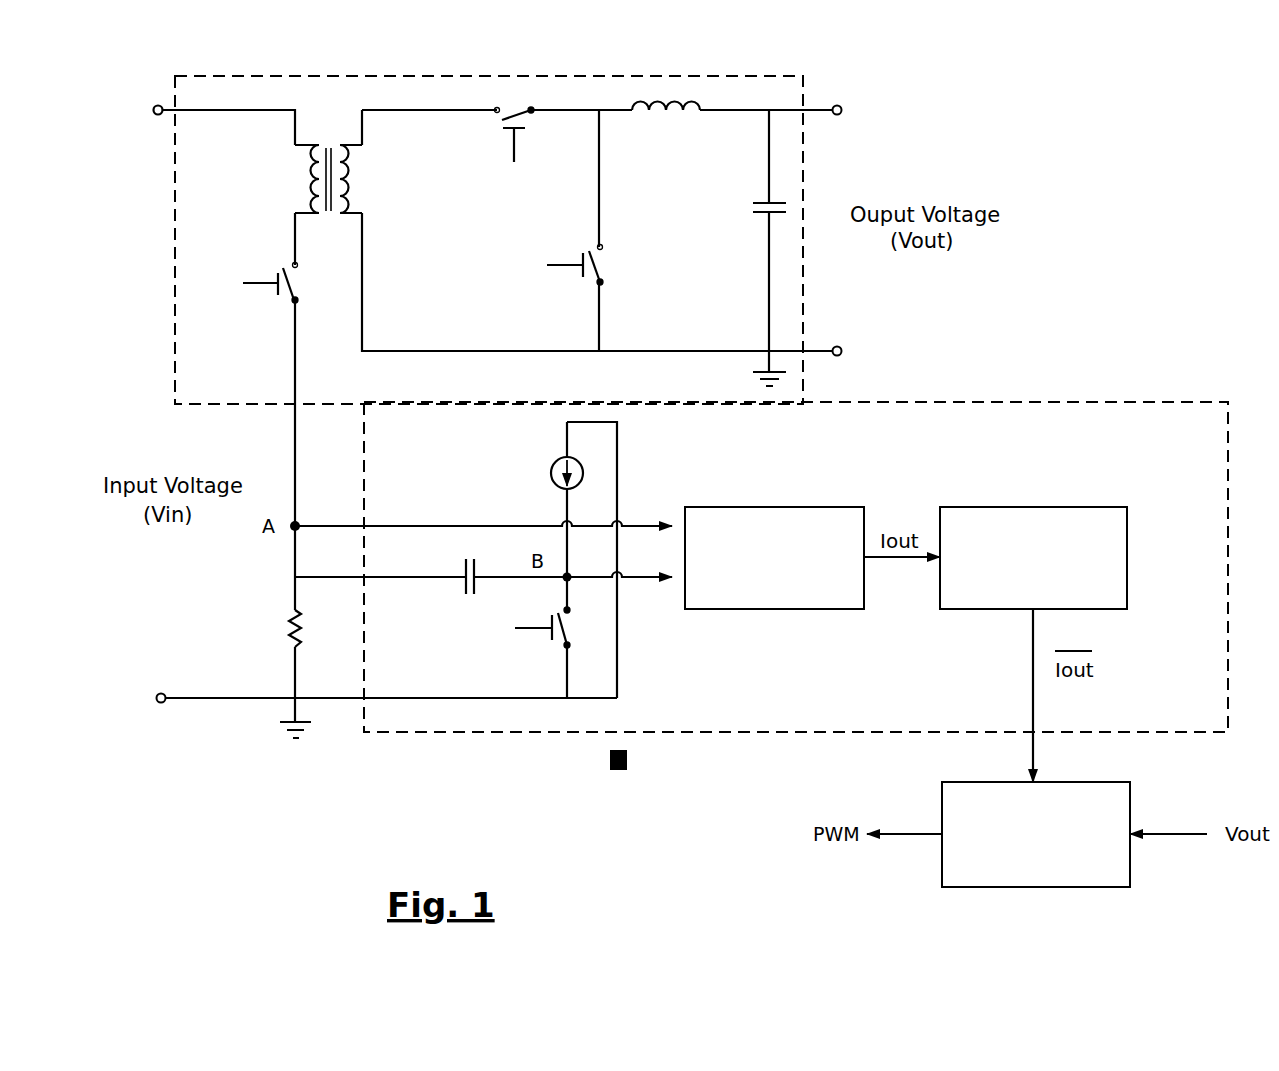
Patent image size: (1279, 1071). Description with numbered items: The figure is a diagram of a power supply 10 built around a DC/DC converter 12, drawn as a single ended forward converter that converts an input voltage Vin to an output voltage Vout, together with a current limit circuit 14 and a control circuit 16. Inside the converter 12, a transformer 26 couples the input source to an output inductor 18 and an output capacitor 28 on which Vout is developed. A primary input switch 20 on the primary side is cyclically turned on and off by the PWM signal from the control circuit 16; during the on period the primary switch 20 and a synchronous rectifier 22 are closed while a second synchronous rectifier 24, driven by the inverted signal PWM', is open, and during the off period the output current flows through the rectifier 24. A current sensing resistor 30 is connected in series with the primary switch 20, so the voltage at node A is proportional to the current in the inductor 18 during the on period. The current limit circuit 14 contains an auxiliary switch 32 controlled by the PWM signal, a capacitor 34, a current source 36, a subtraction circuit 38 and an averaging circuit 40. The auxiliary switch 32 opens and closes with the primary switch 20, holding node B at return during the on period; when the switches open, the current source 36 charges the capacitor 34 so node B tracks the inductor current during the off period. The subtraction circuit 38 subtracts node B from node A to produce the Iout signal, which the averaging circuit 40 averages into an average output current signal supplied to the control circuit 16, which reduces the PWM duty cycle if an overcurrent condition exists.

The power supply 10 is at (1135, 140).
The DC/DC converter 12 is at (697, 74).
The current limit circuit 14 is at (974, 401).
The control circuit 16 is at (1130, 793).
The output inductor 18 is at (658, 118).
The primary input switch 20 is at (283, 302).
The synchronous rectifier 22 is at (500, 120).
The synchronous rectifier 24 is at (602, 245).
The transformer 26 is at (345, 177).
The output capacitor 28 is at (765, 213).
The current sensing resistor 30 is at (289, 637).
The auxiliary switch 32 is at (560, 642).
The capacitor 34 is at (460, 595).
The current source 36 is at (548, 478).
The subtraction circuit 38 is at (777, 505).
The averaging circuit 40 is at (1037, 505).